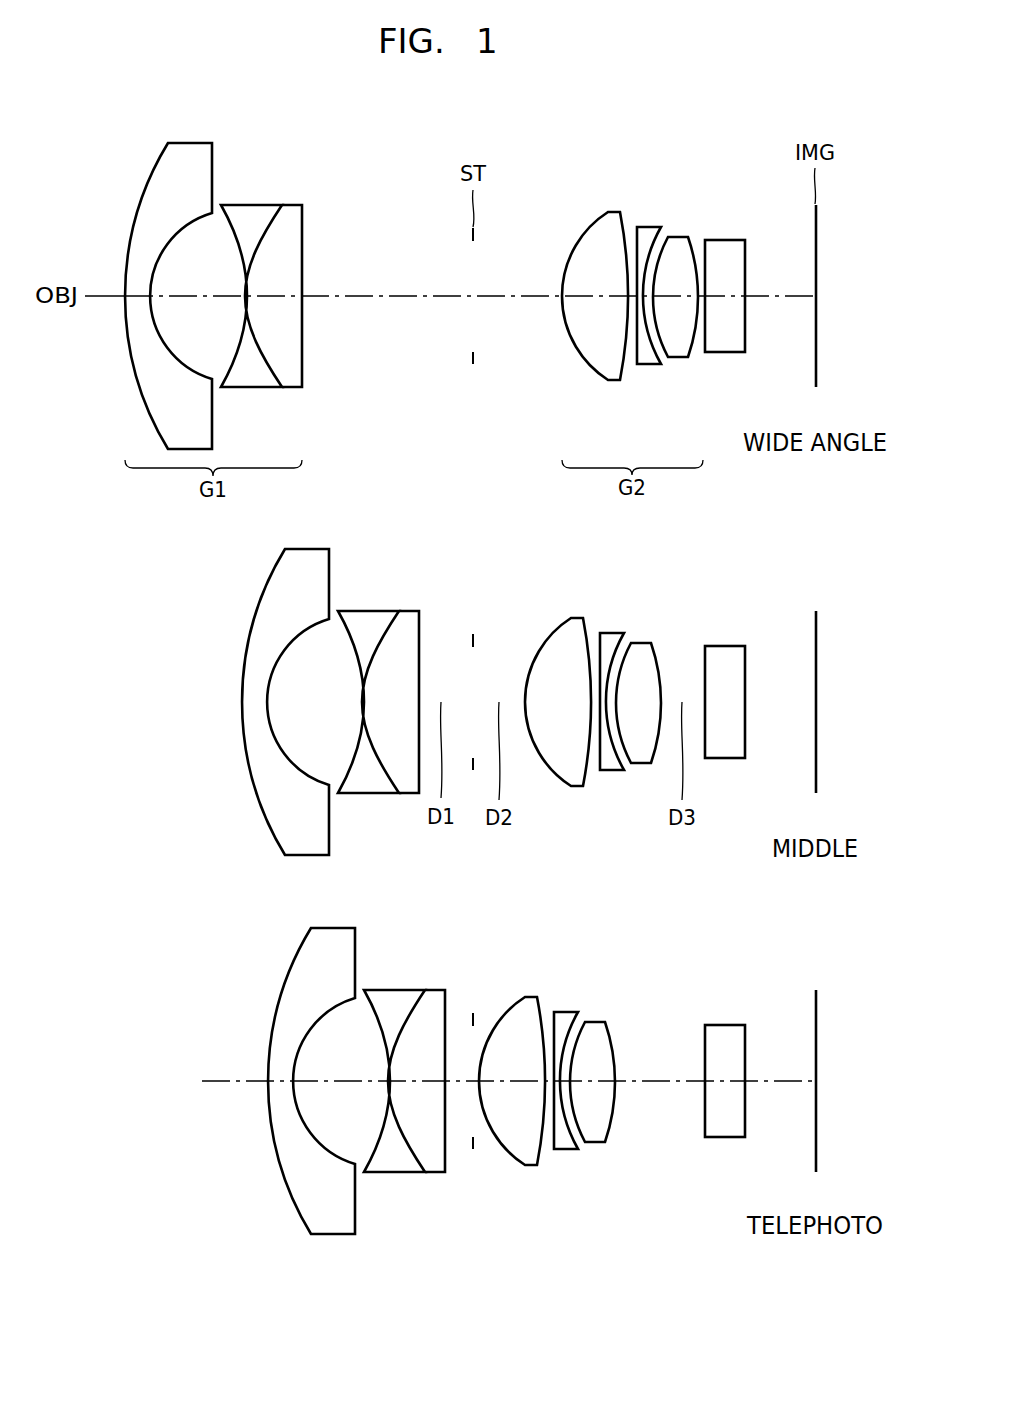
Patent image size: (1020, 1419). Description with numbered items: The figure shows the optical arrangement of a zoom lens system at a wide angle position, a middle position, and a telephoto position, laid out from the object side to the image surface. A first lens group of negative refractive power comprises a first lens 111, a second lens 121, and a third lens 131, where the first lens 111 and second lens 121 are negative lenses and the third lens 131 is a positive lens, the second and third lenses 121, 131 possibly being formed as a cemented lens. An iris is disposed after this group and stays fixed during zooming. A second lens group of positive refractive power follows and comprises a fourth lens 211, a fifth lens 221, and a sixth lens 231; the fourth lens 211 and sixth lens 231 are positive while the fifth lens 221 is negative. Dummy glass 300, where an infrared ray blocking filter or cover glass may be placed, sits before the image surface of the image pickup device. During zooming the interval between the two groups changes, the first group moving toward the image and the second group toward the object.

The first lens 111 is at (192, 142).
The second lens 121 is at (249, 204).
The third lens 131 is at (299, 204).
The fourth lens 211 is at (613, 211).
The fifth lens 221 is at (648, 226).
The sixth lens 231 is at (683, 236).
The dummy glass 300 is at (725, 239).